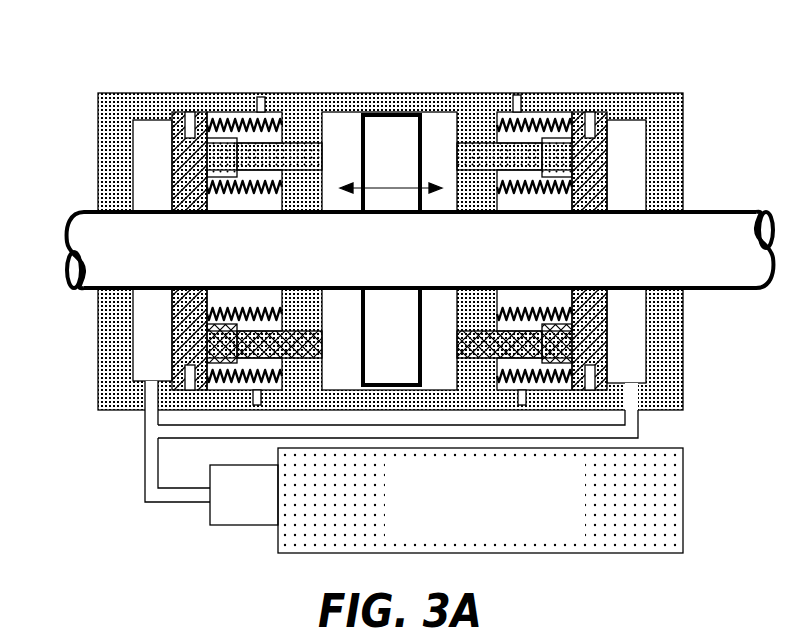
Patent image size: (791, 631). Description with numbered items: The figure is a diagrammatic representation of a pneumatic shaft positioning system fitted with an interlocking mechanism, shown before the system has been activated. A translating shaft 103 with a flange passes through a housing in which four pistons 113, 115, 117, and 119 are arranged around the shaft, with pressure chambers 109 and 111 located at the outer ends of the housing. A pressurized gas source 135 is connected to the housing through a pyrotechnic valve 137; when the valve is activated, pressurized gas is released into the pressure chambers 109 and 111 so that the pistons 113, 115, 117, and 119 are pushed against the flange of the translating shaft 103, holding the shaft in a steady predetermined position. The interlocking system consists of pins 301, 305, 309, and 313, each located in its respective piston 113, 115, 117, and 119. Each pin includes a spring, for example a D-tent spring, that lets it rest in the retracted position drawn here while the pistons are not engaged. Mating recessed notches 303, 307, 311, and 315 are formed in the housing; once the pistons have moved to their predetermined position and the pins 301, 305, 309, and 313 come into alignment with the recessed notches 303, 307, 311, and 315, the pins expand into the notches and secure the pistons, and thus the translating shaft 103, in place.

The translating shaft 103 is at (533, 262).
The pressure chamber 109 is at (143, 173).
The pressure chamber 111 is at (632, 135).
The piston 113 is at (172, 130).
The piston 115 is at (172, 352).
The piston 117 is at (612, 190).
The piston 119 is at (612, 365).
The pressurized gas source 135 is at (548, 527).
The pyrotechnic valve 137 is at (264, 507).
The pin 301 is at (182, 108).
The recessed notch 303 is at (258, 96).
The pin 305 is at (145, 410).
The recessed notch 307 is at (256, 405).
The pin 309 is at (578, 93).
The recessed notch 311 is at (511, 93).
The pin 313 is at (658, 413).
The recessed notch 315 is at (560, 412).